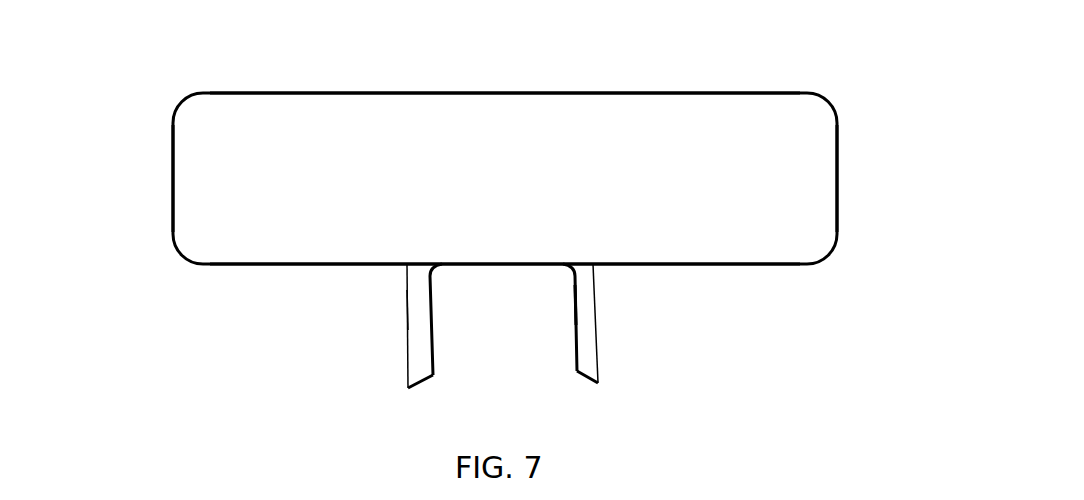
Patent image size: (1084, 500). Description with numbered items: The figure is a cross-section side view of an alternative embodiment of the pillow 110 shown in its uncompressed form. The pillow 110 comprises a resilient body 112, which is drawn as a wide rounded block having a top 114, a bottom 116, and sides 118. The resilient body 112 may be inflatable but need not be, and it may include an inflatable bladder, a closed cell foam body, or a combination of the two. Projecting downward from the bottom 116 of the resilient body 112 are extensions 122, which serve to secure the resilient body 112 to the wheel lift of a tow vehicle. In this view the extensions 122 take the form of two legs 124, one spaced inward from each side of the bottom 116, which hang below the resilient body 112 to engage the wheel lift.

The pillow 110 is at (645, 68).
The resilient body 112 is at (522, 183).
The top 114 is at (390, 92).
The bottom 116 is at (297, 266).
The sides 118 is at (172, 211).
The extensions 122 is at (384, 366).
The legs 124 is at (415, 307).